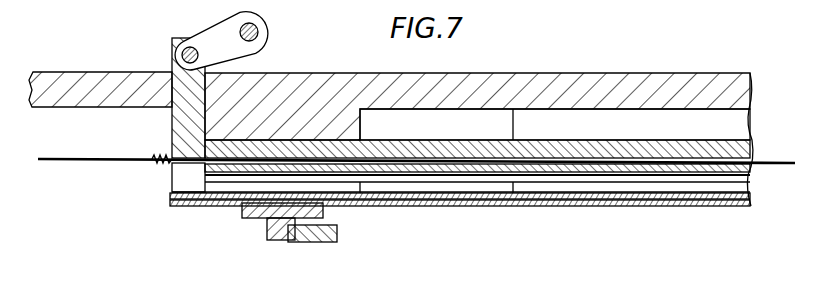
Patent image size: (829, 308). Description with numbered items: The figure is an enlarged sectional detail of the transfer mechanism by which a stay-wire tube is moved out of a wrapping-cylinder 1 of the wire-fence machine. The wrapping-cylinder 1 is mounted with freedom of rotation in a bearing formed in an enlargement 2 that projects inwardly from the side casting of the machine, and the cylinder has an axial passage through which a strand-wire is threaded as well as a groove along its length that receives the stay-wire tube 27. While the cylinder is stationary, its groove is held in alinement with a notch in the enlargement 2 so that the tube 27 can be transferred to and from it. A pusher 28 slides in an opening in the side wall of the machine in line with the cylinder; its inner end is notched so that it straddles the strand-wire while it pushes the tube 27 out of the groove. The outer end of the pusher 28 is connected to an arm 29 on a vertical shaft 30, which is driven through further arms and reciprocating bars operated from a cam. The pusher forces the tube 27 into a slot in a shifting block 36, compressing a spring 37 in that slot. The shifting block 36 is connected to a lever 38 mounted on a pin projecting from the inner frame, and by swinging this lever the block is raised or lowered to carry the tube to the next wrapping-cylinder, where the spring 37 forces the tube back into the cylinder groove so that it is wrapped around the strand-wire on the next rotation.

The wrapping-cylinder 1 is at (600, 150).
The enlargement 2 is at (343, 122).
The stay-wire tube 27 is at (555, 199).
The pusher 28 is at (177, 129).
The arm 29 is at (219, 30).
The vertical shaft 30 is at (260, 32).
The shifting block 36 is at (323, 210).
The spring 37 is at (257, 208).
The lever 38 is at (313, 243).